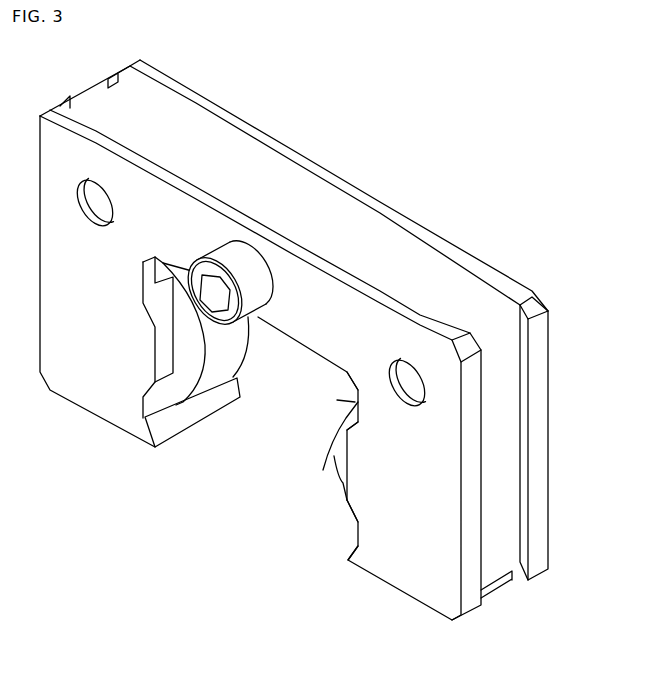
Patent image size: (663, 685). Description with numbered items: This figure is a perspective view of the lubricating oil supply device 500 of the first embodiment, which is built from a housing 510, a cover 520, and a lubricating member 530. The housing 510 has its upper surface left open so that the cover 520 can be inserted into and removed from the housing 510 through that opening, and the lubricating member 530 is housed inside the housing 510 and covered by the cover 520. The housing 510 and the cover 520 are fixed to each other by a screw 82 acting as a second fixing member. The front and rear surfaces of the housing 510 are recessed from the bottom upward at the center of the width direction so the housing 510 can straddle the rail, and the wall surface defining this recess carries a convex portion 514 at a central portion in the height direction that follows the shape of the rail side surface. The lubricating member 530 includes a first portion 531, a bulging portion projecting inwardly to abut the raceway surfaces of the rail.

The lubricating oil supply device 500 is at (390, 117).
The housing 510 is at (403, 567).
The cover 520 is at (500, 470).
The convex portion 514 is at (147, 352).
The lubricating member 530 is at (337, 447).
The first portion 531 is at (316, 505).
The screw 82 is at (233, 250).